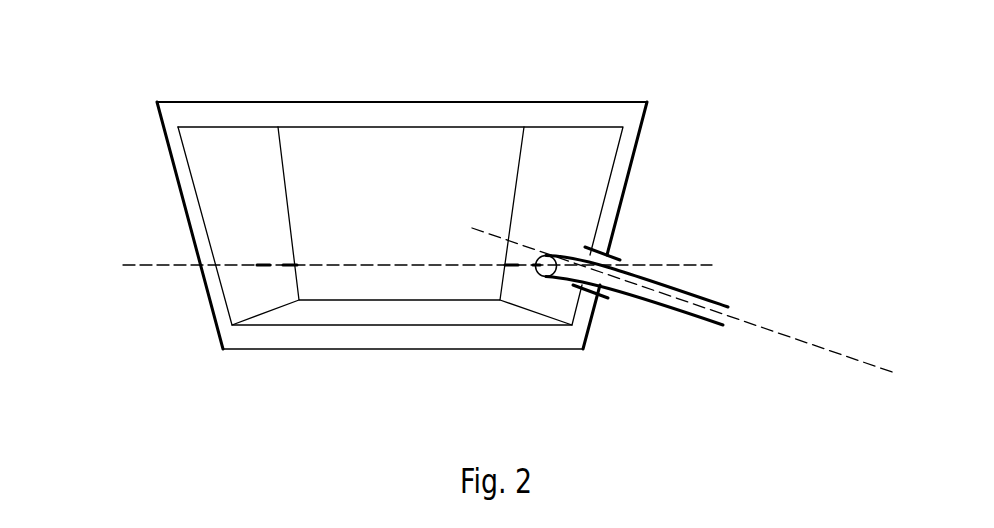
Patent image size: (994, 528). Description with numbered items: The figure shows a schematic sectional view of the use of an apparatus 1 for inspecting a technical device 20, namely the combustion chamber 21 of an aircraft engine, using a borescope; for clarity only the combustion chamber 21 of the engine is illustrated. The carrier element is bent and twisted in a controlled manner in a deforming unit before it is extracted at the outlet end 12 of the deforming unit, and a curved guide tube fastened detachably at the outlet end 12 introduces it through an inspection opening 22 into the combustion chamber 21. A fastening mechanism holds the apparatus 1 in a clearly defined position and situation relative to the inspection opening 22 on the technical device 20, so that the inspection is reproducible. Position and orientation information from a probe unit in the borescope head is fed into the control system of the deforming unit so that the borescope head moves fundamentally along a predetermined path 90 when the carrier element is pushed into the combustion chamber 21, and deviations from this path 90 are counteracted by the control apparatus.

The apparatus 1 is at (743, 149).
The technical device 20 is at (159, 170).
The combustion chamber 21 is at (208, 207).
The inspection opening 22 is at (620, 255).
The outlet end 12 is at (695, 316).
The predetermined path 90 is at (155, 268).